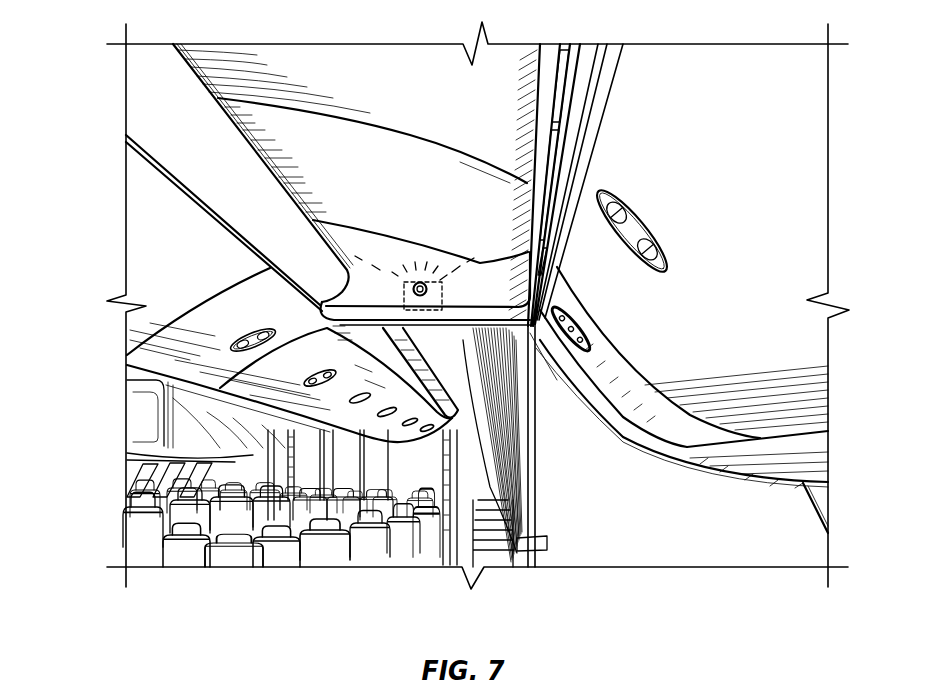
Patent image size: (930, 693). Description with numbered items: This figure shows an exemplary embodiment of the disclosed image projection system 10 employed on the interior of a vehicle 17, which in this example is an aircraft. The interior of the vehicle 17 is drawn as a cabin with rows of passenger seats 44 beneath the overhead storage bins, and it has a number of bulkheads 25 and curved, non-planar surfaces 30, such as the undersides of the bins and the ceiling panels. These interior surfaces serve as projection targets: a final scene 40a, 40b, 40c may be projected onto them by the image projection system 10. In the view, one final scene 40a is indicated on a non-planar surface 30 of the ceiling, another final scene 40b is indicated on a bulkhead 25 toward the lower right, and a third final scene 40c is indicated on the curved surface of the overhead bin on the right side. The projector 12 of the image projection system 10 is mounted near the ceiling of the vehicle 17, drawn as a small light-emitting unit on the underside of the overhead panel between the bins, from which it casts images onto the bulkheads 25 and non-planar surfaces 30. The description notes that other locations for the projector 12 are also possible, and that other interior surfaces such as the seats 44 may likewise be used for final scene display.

The vehicle 17 is at (104, 170).
The non-planar surface 30 is at (426, 243).
The final scene 40a is at (431, 180).
The final scene 40b is at (767, 520).
The final scene 40c is at (679, 335).
The image projection system 10 is at (383, 280).
The projector 12 is at (432, 290).
The bulkhead 25 is at (386, 445).
The passenger seats 44 is at (225, 560).